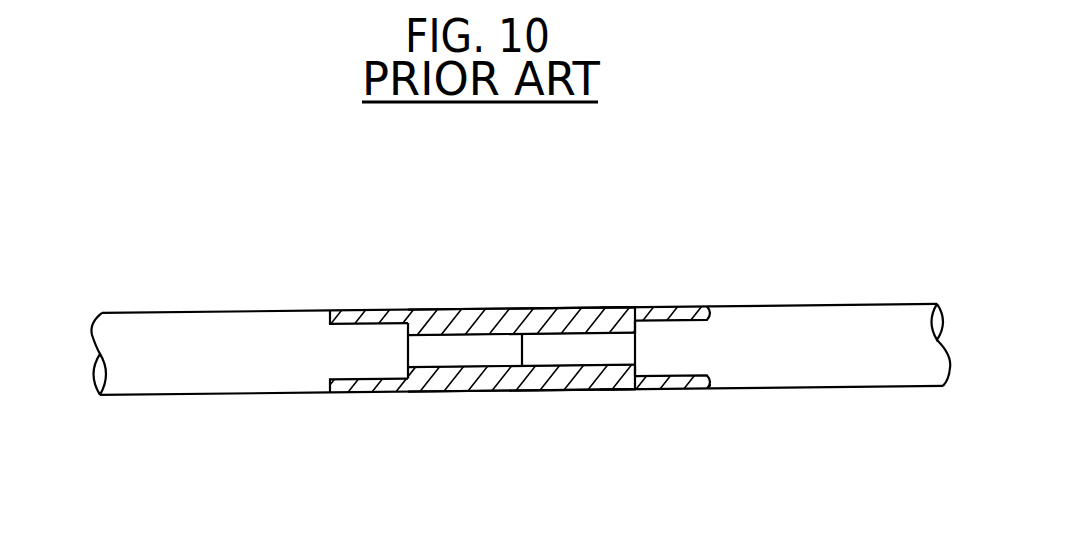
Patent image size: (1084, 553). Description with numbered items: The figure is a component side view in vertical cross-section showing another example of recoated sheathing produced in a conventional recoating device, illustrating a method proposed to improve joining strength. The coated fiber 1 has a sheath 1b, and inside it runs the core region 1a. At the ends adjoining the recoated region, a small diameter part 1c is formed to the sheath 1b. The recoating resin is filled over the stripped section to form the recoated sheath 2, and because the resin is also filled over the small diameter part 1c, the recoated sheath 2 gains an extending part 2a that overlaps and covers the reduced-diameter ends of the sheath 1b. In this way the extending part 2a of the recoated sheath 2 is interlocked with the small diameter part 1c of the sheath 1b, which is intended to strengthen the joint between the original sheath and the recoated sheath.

The tube 1 is at (867, 290).
The inner bore of tube 1a is at (570, 349).
The sheath 1b is at (244, 312).
The small diameter part 1c is at (692, 308).
The recoated sheath 2 is at (539, 309).
The extending part 2a is at (653, 308).